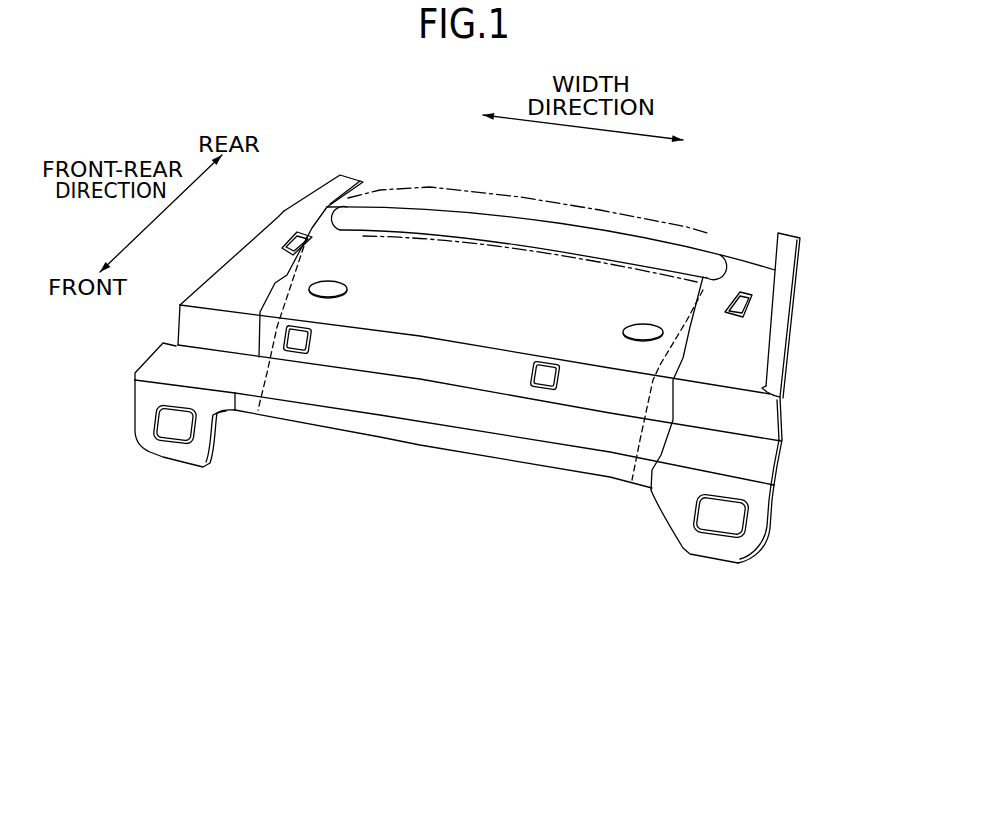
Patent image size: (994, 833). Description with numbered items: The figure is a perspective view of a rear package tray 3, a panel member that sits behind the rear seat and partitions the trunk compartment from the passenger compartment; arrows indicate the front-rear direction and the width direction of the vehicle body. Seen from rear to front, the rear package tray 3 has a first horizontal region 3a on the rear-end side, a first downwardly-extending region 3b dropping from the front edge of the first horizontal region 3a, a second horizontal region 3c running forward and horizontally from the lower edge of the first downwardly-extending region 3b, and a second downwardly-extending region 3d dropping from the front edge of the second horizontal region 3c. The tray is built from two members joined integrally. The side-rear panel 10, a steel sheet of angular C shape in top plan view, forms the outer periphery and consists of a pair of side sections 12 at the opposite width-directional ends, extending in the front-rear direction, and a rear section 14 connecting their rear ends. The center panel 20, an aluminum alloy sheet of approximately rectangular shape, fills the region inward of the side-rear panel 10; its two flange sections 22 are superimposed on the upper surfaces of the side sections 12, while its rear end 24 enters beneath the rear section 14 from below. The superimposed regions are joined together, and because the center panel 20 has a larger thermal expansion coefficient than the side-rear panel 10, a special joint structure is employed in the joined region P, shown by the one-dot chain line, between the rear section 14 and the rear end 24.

The side-rear panel 10 is at (266, 256).
The side sections 12 is at (217, 278).
The rear section 14 is at (513, 227).
The center panel 20 is at (457, 410).
The flange sections 22 is at (247, 367).
The rear end 24 is at (422, 190).
The rear package tray 3 is at (857, 337).
The first horizontal region 3a is at (797, 335).
The first downwardly-extending region 3b is at (790, 418).
The second horizontal region 3c is at (785, 465).
The second downwardly-extending region 3d is at (780, 512).
The joined region P is at (703, 232).